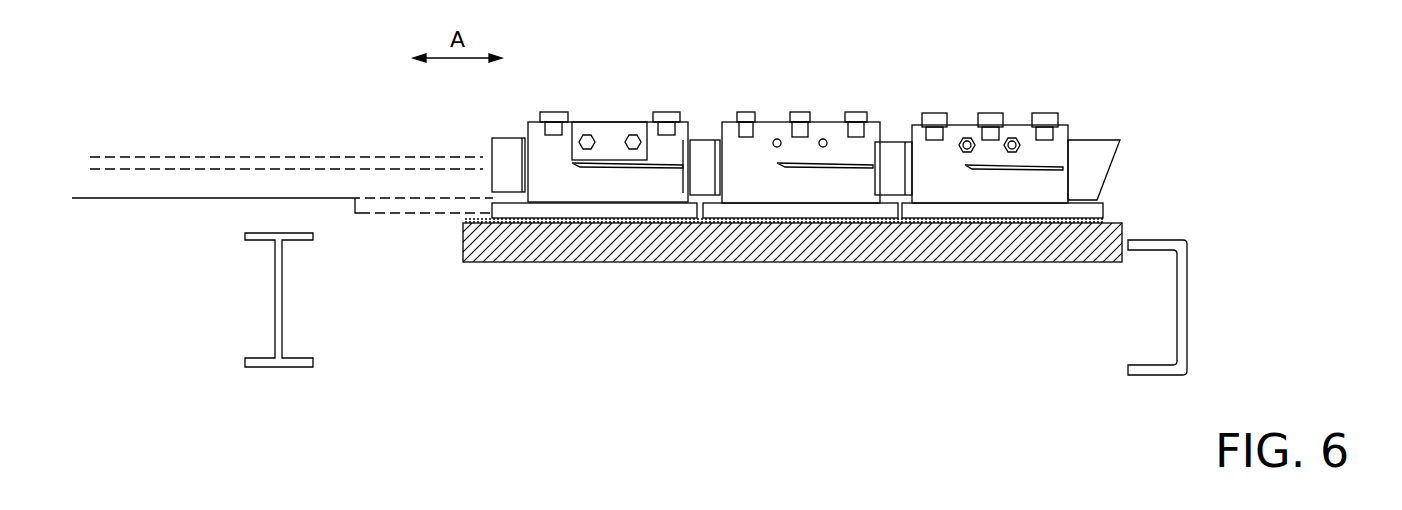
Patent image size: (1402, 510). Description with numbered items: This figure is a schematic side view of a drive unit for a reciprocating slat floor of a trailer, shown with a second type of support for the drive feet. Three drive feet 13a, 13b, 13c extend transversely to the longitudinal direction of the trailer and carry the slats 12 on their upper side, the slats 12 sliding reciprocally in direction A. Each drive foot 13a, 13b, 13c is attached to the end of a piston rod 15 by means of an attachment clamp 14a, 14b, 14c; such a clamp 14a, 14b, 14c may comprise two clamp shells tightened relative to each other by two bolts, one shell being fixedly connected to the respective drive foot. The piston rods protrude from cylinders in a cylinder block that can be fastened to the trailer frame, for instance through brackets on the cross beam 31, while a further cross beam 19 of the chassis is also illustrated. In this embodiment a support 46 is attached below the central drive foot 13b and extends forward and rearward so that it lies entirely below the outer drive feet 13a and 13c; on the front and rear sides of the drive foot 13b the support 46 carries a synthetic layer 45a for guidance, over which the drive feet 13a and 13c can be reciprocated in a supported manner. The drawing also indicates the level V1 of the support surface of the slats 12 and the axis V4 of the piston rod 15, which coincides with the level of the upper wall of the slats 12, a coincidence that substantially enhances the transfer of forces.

The slats 12 is at (365, 190).
The drive foot 13a is at (570, 210).
The drive foot 13b is at (810, 210).
The drive foot 13c is at (980, 213).
The attachment clamp 14a is at (618, 150).
The attachment clamp 14b is at (824, 142).
The attachment clamp 14c is at (1022, 130).
The piston rod 15 is at (1097, 150).
The cross beam 19 is at (281, 315).
The cross beam 31 is at (1182, 333).
The synthetic layer 45a is at (655, 222).
The support 46 is at (740, 246).
The level of the support surface of the slats V1 is at (168, 157).
The axis of the piston rods V4 is at (188, 171).